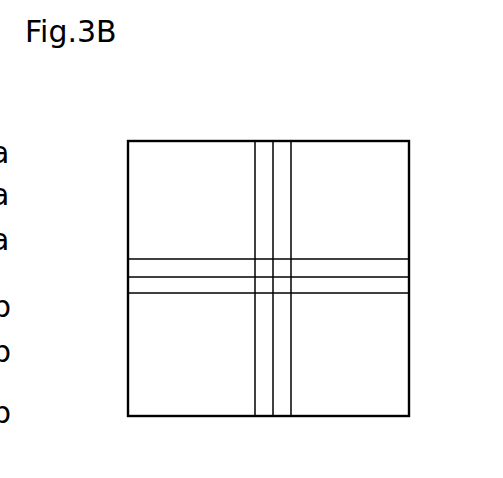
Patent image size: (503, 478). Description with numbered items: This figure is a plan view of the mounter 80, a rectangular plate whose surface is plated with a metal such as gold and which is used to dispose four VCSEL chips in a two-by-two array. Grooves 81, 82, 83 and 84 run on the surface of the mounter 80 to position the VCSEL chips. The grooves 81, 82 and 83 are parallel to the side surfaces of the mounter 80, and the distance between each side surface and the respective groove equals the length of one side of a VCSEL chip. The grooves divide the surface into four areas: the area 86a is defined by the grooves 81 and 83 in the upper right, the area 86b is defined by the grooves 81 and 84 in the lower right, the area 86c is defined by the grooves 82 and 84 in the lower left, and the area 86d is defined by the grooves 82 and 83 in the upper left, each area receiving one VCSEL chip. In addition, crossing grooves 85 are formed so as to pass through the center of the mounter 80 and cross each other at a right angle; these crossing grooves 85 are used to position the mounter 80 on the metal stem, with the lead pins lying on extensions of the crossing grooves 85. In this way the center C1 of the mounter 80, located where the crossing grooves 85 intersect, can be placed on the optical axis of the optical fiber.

The mounter 80 is at (383, 126).
The groove 81 is at (291, 175).
The groove 82 is at (255, 178).
The groove 83 is at (372, 258).
The groove 84 is at (372, 293).
The crossing grooves 85 is at (273, 148).
The area 86a is at (350, 200).
The area 86b is at (350, 354).
The area 86c is at (191, 354).
The area 86d is at (191, 200).
The center of the mounter C1 is at (273, 278).